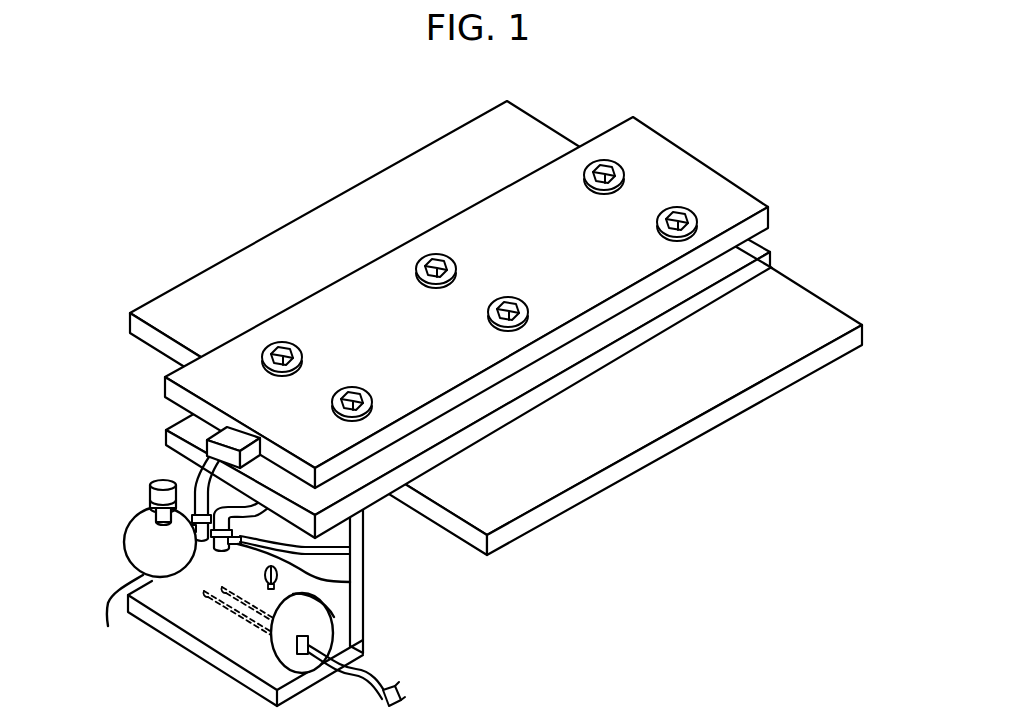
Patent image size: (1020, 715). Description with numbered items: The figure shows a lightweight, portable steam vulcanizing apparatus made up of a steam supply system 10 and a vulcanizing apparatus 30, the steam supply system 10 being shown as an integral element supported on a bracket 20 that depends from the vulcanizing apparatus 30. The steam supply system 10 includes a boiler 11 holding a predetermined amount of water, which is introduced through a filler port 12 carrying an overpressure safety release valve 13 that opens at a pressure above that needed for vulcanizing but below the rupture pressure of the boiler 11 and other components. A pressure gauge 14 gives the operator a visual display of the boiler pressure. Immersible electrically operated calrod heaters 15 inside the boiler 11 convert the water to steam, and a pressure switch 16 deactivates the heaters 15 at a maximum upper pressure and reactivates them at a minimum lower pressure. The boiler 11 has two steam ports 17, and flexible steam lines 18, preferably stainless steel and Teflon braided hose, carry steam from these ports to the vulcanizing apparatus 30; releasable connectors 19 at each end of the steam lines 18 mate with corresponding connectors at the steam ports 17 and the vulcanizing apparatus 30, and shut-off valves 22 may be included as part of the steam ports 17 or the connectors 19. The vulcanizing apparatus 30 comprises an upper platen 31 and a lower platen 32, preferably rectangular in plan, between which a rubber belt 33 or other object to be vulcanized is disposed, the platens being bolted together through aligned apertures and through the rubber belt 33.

The steam supply system 10 is at (459, 386).
The boiler 11 is at (147, 551).
The filler port 12 is at (156, 514).
The overpressure safety release valve 13 is at (153, 483).
The pressure gauge 14 is at (334, 617).
The calrod heaters 15 is at (212, 652).
The pressure switch 16 is at (354, 664).
The steam ports 17 is at (121, 612).
The flexible steam lines 18 is at (197, 490).
The releasable connectors 19 is at (352, 546).
The bracket 20 is at (358, 563).
The shut-off valves 22 is at (365, 579).
The vulcanizing apparatus 30 is at (489, 355).
The upper platen 31 is at (725, 195).
The lower platen 32 is at (348, 485).
The rubber belt 33 is at (792, 305).